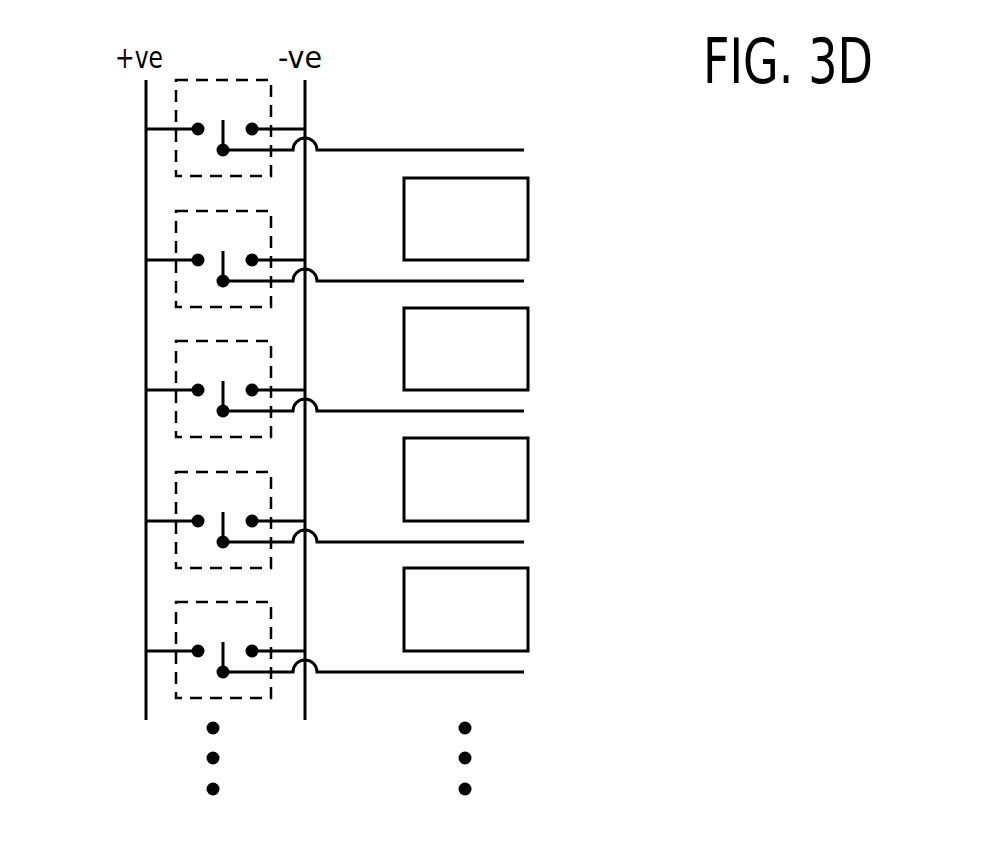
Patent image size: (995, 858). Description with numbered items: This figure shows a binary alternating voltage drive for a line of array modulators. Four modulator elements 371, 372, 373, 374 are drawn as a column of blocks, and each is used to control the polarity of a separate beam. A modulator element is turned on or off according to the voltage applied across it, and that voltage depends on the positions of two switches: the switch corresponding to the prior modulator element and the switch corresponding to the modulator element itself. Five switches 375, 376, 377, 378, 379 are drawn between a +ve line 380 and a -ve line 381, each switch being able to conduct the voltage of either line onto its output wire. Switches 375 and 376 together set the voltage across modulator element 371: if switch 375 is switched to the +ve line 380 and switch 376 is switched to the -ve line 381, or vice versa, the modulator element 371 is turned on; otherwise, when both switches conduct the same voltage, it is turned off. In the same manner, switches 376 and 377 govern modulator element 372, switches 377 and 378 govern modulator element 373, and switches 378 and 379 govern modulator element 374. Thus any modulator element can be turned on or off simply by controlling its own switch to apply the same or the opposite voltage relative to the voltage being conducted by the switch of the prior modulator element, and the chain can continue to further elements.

The modulator element 371 is at (532, 203).
The modulator element 372 is at (532, 338).
The modulator element 373 is at (532, 467).
The modulator element 374 is at (532, 623).
The switch 375 is at (226, 77).
The switch 376 is at (274, 228).
The switch 377 is at (274, 360).
The switch 378 is at (274, 493).
The switch 379 is at (274, 615).
The +ve line 380 is at (143, 112).
The -ve line 381 is at (308, 112).